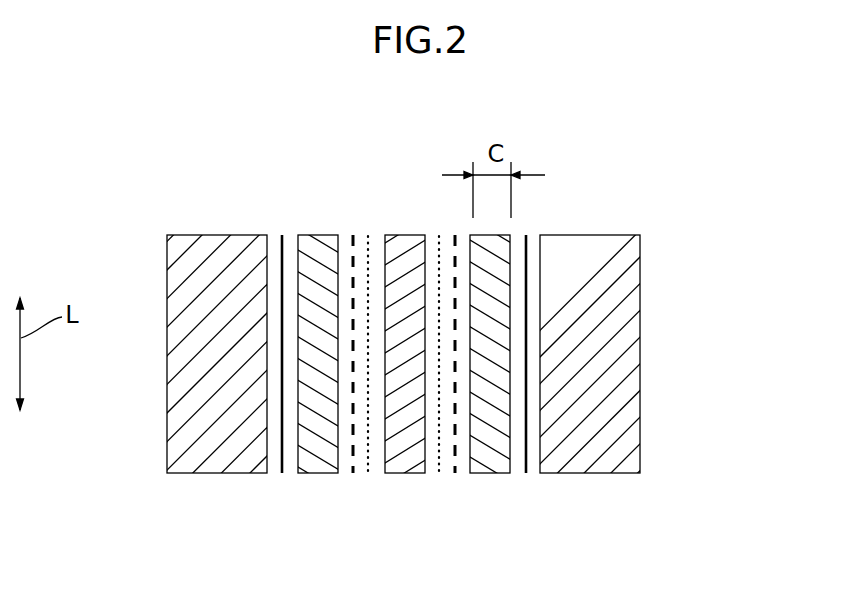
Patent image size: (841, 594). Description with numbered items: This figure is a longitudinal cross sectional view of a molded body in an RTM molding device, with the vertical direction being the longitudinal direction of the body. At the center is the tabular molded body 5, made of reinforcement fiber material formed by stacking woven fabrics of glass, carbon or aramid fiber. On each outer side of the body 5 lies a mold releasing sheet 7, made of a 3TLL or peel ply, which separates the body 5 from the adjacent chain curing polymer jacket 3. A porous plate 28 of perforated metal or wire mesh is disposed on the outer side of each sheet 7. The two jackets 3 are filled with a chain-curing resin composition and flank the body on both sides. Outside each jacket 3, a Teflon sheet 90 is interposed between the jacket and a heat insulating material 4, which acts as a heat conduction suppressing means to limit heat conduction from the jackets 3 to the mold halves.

The chain curing polymer jacket 3 is at (313, 470).
The heat insulating material 4 is at (167, 355).
The molded body 5 is at (392, 467).
The mold releasing sheet 7 is at (440, 251).
The porous plate 28 is at (352, 458).
The Teflon sheet 90 is at (280, 243).